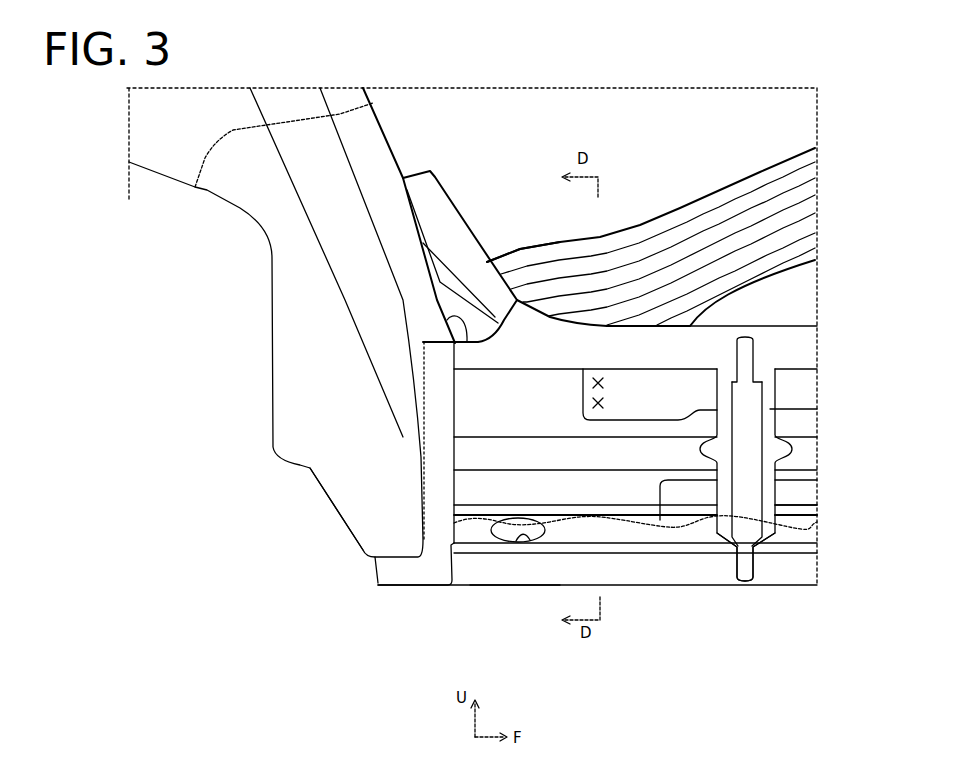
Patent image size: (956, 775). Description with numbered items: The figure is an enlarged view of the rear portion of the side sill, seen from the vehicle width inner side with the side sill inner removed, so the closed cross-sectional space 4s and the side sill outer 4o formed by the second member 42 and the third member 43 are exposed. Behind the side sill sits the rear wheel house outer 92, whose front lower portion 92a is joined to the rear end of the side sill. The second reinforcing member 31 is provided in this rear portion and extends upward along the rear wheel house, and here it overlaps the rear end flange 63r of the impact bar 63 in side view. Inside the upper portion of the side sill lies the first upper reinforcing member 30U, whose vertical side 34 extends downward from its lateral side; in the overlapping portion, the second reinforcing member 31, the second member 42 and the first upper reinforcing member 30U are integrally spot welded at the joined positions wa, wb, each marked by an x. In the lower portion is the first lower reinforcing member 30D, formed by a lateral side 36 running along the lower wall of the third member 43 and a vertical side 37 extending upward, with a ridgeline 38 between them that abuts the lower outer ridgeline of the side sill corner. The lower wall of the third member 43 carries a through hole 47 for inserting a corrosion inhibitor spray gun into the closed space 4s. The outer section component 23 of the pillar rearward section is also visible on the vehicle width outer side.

The rear wheel house outer 92 is at (270, 352).
The front lower portion 92a is at (352, 486).
The second reinforcing member 31 is at (448, 203).
The impact bar 63 is at (690, 203).
The rear end flange 63r is at (515, 247).
The second member 42 is at (786, 316).
The closed cross-sectional space 4s is at (563, 464).
The vertical side 34 is at (582, 397).
The joined position wa is at (604, 383).
The joined position wb is at (604, 403).
The vertical side 37 is at (657, 498).
The first upper reinforcing member 30U is at (797, 410).
The first lower reinforcing member 30D is at (690, 523).
The ridgeline 38 is at (812, 508).
The lateral side 36 is at (662, 523).
The outer section component 23 is at (783, 523).
The through hole 47 is at (515, 538).
The third member 43 is at (778, 588).
The side sill outer 4o is at (511, 589).